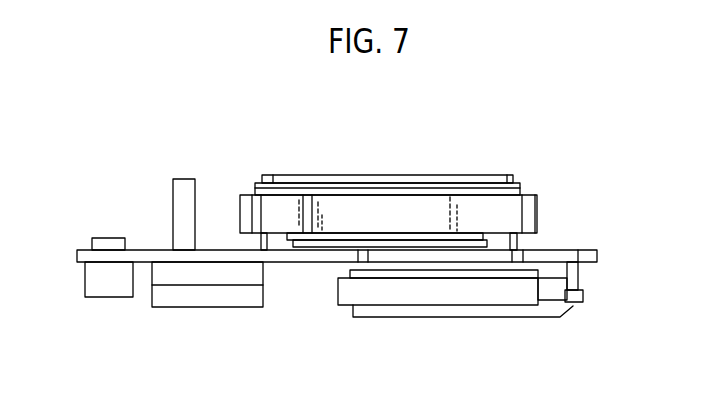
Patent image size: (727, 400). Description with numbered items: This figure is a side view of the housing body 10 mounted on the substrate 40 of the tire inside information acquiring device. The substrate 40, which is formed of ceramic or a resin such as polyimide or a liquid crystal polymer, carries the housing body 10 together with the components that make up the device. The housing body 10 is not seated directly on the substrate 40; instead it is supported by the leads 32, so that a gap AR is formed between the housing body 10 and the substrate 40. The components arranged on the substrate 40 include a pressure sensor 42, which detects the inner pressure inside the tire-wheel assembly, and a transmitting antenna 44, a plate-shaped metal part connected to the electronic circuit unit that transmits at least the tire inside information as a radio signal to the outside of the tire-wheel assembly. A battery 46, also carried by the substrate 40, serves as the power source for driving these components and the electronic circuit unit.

The housing body 10 is at (560, 188).
The leads 32 is at (258, 247).
The gap AR is at (271, 247).
The substrate 40 is at (598, 251).
The pressure sensor 42 is at (237, 300).
The transmitting antenna 44 is at (106, 287).
The battery 46 is at (485, 290).